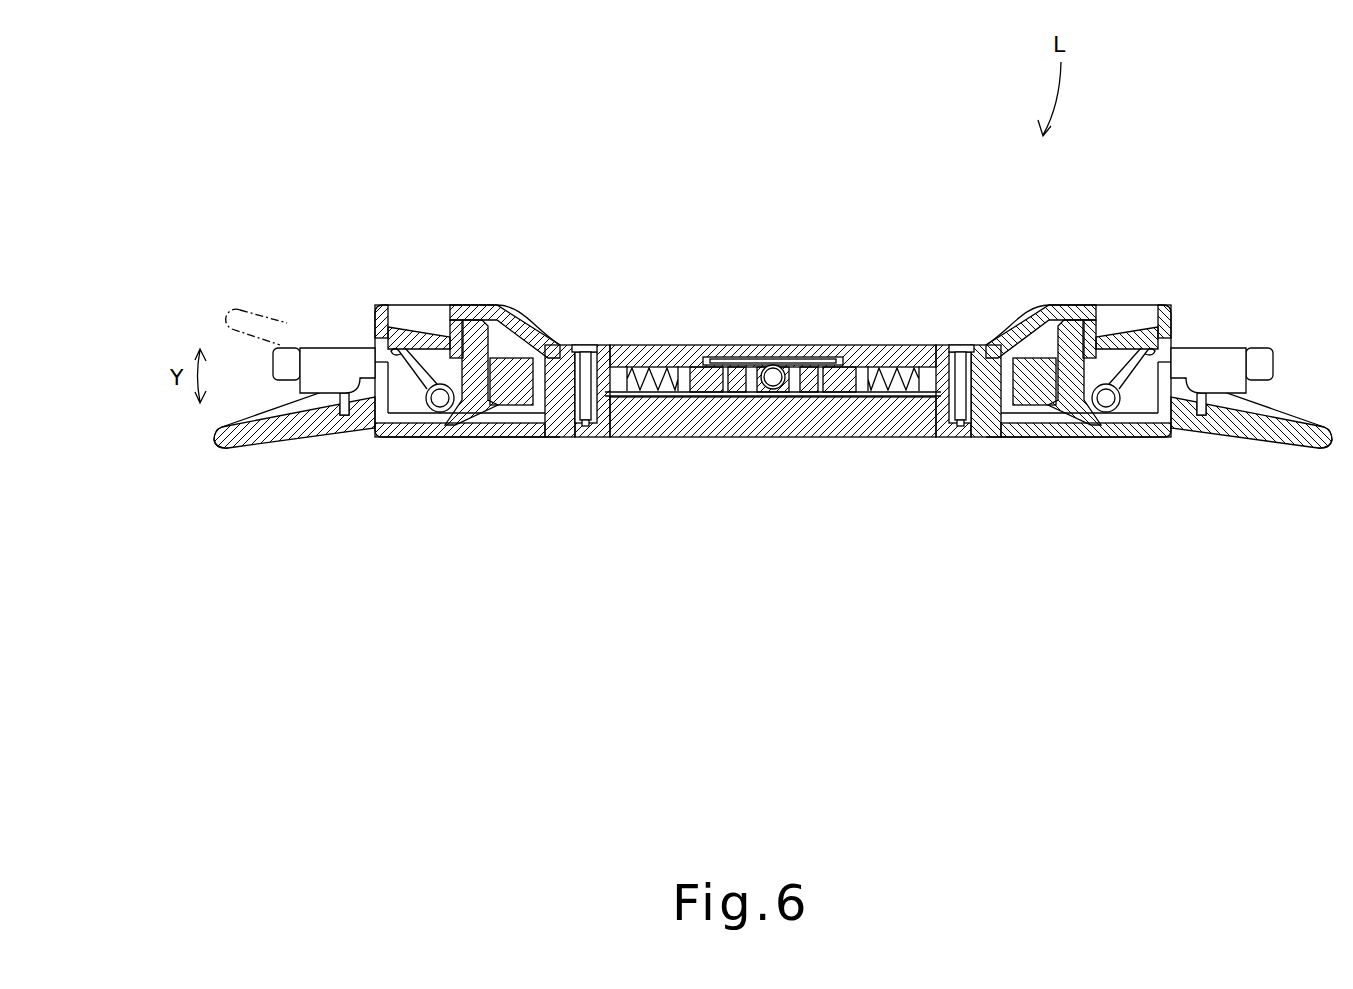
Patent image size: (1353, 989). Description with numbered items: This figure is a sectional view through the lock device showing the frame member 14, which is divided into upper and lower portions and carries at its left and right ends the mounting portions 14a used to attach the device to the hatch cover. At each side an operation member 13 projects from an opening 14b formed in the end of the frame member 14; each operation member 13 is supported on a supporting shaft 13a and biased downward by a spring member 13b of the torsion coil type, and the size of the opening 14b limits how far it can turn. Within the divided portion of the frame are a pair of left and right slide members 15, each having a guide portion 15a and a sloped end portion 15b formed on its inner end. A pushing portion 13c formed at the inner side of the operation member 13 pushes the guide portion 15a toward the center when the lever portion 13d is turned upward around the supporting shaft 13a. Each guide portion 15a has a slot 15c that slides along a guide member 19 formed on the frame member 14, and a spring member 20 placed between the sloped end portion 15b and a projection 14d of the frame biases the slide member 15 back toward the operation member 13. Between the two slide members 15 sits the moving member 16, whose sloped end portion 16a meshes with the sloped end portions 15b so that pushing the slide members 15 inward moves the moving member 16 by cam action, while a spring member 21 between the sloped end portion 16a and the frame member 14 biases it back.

The operation member 13 is at (288, 440).
The supporting shaft 13a is at (438, 400).
The spring member 13b is at (408, 350).
The pushing portion 13c is at (495, 305).
The lever portion 13d is at (248, 440).
The frame member 14 is at (627, 440).
The mounting portion 14a is at (288, 360).
The opening 14b is at (383, 363).
The projection 14d is at (687, 440).
The slide member 15 is at (498, 420).
The guide portion 15a is at (522, 402).
The sloped end portion 15b is at (727, 440).
The slot 15c is at (553, 440).
The moving member 16 is at (812, 440).
The sloped end portion 16a is at (737, 345).
The guide member 19 is at (602, 440).
The spring member 20 is at (652, 343).
The spring member 21 is at (786, 345).